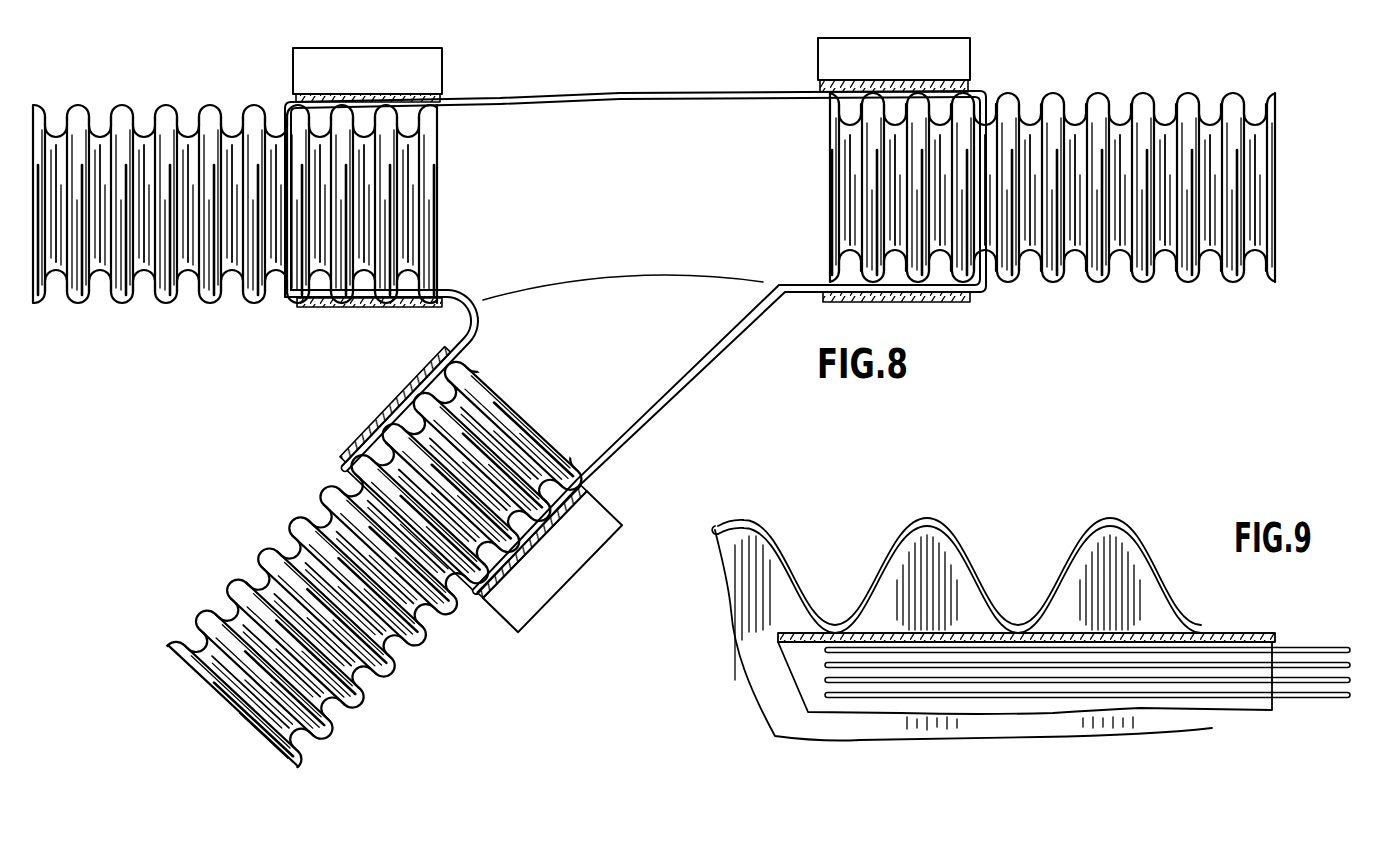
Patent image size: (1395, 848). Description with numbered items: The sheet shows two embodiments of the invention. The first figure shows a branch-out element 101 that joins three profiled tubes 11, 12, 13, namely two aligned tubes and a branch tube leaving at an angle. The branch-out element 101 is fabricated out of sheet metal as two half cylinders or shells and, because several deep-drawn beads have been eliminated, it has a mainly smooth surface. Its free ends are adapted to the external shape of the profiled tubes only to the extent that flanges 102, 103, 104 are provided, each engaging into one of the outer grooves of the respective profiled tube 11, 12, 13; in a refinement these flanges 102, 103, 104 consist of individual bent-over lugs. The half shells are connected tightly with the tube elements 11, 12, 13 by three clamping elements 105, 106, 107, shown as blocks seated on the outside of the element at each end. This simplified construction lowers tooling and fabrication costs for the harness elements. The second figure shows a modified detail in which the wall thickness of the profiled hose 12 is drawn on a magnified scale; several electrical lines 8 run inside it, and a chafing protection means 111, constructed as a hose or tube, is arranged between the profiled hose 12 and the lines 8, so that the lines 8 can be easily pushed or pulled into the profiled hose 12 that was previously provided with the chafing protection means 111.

In FIG. 9, the electrical lines 8 is at (1355, 640).
In FIG. 8, the profiled tube 11 is at (1140, 282).
In FIG. 8, the profiled tube 12 is at (163, 303).
In FIG. 9, the profiled tube 12 is at (1130, 530).
In FIG. 8, the profiled tube 13 is at (393, 672).
In FIG. 8, the branch-out element 101 is at (690, 377).
In FIG. 8, the flange 102 is at (985, 285).
In FIG. 8, the flange 103 is at (285, 104).
In FIG. 8, the flange 104 is at (334, 461).
In FIG. 8, the clamping element 105 is at (970, 52).
In FIG. 8, the clamping element 106 is at (442, 62).
In FIG. 8, the clamping element 107 is at (590, 556).
In FIG. 9, the chafing protection means 111 is at (793, 643).